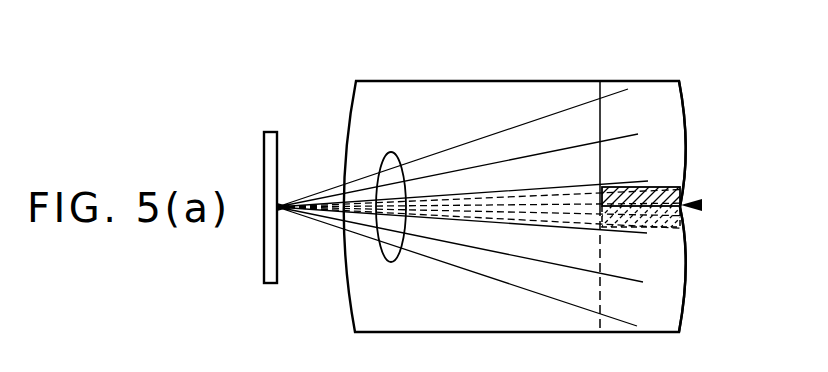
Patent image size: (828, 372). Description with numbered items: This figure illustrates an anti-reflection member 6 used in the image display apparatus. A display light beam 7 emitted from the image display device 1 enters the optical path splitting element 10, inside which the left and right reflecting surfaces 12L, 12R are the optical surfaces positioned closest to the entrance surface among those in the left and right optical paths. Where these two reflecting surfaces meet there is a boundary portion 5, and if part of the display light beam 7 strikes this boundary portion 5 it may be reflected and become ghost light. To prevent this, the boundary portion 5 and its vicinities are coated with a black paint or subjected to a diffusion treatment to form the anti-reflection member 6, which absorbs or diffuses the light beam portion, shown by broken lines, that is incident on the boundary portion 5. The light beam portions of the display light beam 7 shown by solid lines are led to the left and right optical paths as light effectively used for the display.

The image display device 1 is at (273, 132).
The optical path splitting element 10 is at (447, 96).
The display light beam 7 is at (391, 263).
The right reflecting surface 12R is at (675, 114).
The left reflecting surface 12L is at (668, 292).
The anti-reflection member 6 is at (680, 195).
The boundary portion 5 is at (702, 205).